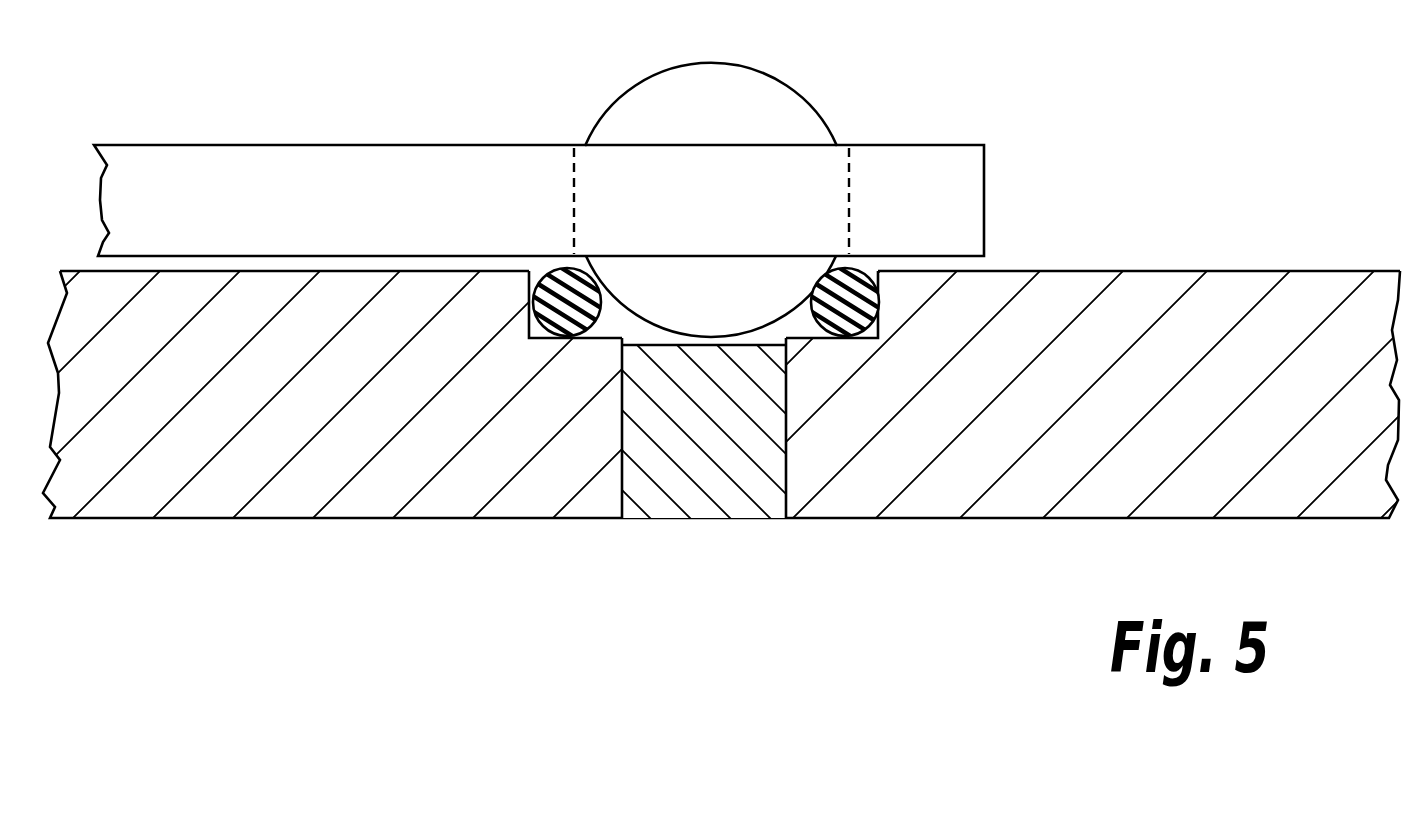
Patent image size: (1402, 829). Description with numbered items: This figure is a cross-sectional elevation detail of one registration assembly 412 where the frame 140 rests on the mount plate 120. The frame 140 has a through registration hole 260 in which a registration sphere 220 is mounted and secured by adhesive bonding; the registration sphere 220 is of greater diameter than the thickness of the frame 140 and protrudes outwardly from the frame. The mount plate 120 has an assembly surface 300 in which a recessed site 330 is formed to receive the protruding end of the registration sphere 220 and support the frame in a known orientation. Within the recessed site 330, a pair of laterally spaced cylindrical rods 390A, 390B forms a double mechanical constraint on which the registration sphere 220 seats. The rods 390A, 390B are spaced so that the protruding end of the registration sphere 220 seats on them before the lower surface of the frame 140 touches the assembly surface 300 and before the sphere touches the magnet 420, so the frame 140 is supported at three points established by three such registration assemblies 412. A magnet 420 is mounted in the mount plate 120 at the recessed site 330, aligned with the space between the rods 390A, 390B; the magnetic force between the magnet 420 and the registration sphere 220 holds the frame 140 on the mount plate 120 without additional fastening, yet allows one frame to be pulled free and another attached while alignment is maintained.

The mount plate 120 is at (1266, 265).
The frame 140 is at (991, 165).
The registration sphere 220 is at (673, 172).
The registration hole 260 is at (849, 176).
The assembly surface 300 is at (1147, 270).
The recessed site 330 is at (878, 324).
The cylindrical rod 390A is at (545, 332).
The cylindrical rod 390B is at (867, 332).
The registration assembly 412 is at (624, 85).
The magnet 420 is at (673, 477).